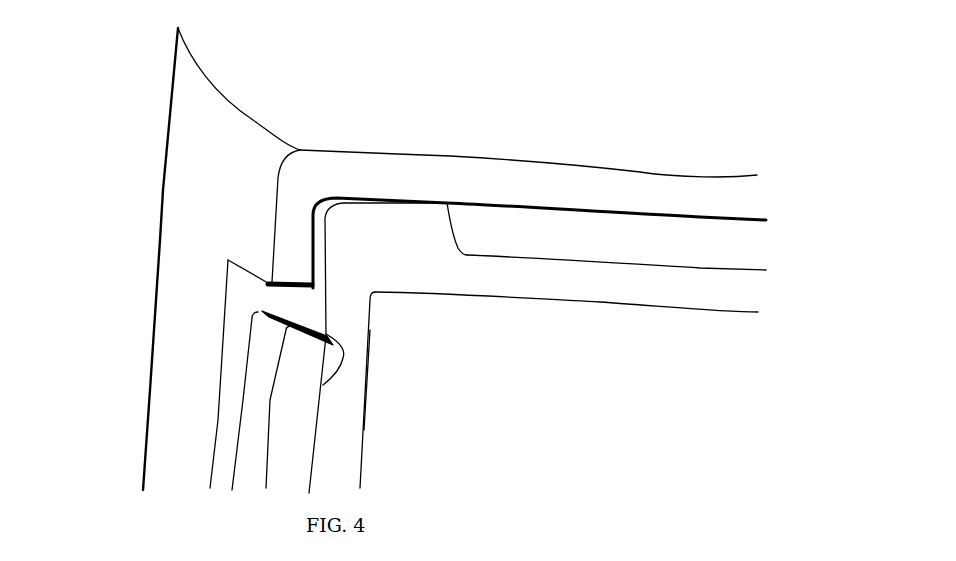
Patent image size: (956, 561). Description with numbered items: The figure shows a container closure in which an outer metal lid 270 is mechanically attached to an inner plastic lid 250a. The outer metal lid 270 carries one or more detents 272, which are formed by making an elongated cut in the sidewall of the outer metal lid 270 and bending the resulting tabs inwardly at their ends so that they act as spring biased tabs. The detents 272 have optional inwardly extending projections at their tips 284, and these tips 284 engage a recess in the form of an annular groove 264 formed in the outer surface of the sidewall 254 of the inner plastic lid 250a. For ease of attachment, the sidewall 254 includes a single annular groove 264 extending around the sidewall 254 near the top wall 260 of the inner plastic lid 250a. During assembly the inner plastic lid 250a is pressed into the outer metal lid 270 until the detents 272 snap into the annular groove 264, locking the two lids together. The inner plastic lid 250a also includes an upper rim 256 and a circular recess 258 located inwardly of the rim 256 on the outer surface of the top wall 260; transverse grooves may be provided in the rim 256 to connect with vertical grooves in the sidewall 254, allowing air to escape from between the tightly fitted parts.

The outer metal lid 270 is at (163, 222).
The circular recess 258 is at (666, 250).
The upper rim 256 is at (397, 218).
The top wall 260 is at (585, 287).
The sidewall 254 is at (360, 318).
The inner plastic lid 250a is at (360, 438).
The annular groove 264 is at (347, 358).
The tips 284 is at (293, 342).
The detents 272 is at (287, 478).